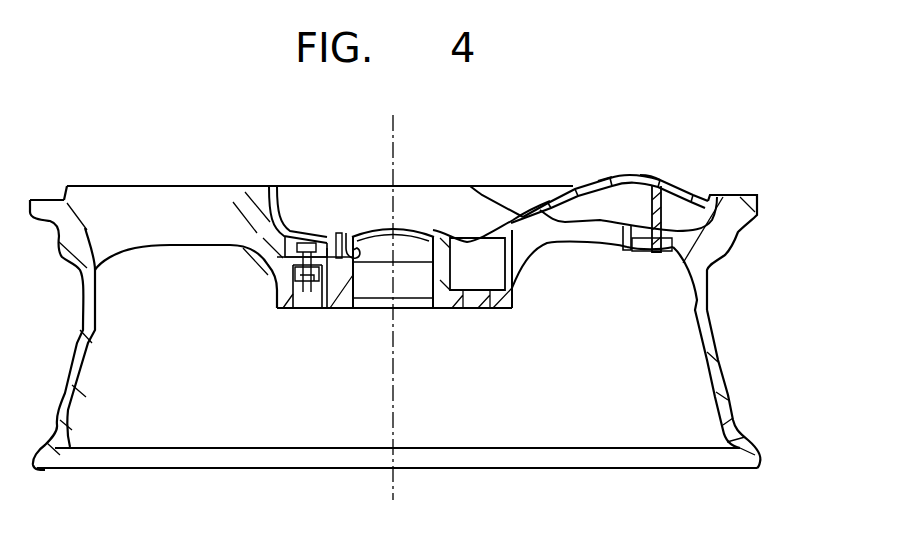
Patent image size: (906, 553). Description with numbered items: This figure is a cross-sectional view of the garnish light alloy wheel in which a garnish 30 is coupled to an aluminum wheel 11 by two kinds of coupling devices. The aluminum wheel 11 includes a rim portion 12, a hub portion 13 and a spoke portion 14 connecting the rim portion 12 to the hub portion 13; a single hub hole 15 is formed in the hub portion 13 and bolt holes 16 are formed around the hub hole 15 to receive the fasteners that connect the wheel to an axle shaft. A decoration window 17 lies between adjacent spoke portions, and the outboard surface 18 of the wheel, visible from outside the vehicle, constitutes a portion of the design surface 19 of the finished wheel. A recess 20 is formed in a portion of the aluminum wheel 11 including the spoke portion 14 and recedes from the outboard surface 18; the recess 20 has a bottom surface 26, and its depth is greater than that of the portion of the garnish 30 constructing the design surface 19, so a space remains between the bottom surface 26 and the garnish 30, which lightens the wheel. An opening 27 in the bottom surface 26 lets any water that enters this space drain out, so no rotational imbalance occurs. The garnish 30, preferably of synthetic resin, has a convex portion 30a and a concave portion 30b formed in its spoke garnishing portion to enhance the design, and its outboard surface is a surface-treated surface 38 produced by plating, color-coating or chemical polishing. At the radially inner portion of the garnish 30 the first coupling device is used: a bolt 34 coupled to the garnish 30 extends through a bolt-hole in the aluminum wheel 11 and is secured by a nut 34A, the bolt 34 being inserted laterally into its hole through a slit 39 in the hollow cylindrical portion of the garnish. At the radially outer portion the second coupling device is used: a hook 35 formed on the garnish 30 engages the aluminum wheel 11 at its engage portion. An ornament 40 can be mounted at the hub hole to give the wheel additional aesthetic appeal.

The aluminum wheel 11 is at (737, 197).
The rim portion 12 is at (718, 315).
The hub portion 13 is at (430, 268).
The spoke portion 14 is at (635, 253).
The hub hole 15 is at (423, 308).
The bolt hole 16 is at (477, 308).
The decoration window 17 is at (231, 200).
The outboard surface 18 is at (257, 188).
The design surface 19 is at (614, 177).
The recess 20 is at (690, 193).
The bottom surface 26 is at (583, 213).
The opening 27 is at (550, 245).
The garnish 30 is at (577, 183).
The convex portion 30a is at (657, 180).
The concave portion 30b is at (474, 188).
The bolt 34 is at (294, 212).
The nut 34A is at (304, 309).
The hook 35 is at (655, 252).
The surface-treated surface 38 is at (633, 168).
The slit 39 is at (317, 230).
The ornament 40 is at (362, 232).